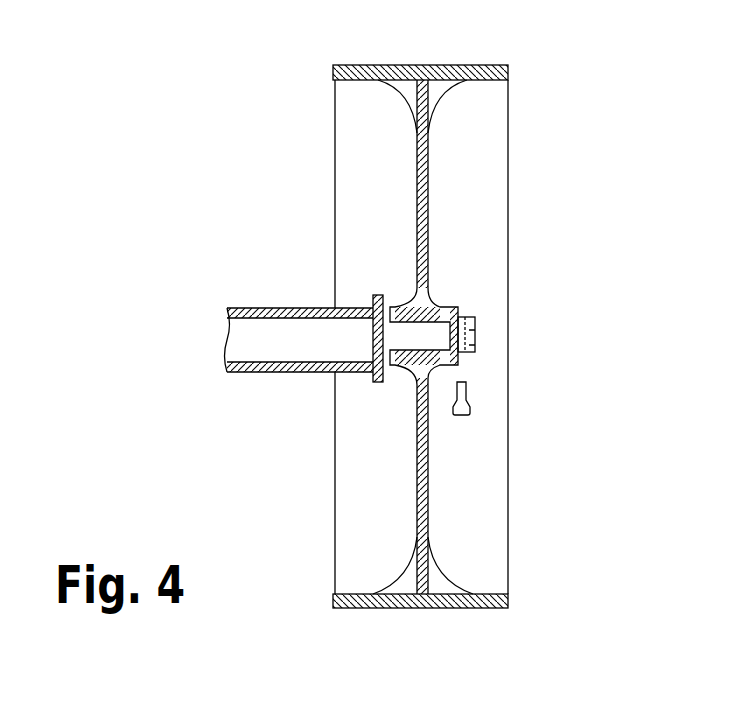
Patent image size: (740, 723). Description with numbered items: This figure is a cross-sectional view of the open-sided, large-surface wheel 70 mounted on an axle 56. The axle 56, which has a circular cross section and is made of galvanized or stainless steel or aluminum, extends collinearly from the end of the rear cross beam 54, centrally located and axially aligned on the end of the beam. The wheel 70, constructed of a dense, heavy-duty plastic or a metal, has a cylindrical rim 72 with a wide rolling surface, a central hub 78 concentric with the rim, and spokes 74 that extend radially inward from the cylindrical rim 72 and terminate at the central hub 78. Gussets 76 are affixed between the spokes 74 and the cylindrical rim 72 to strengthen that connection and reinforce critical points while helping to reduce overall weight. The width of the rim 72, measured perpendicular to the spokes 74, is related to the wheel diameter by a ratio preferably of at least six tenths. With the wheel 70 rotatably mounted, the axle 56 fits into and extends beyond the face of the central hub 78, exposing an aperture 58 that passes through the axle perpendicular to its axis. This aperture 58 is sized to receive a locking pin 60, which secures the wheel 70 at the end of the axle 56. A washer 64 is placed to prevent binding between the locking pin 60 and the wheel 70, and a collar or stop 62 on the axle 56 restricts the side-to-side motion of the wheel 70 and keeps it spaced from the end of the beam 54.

The rear cross beam 54 is at (303, 305).
The axle 56 is at (462, 315).
The aperture 58 is at (473, 338).
The locking pin 60 is at (470, 413).
The collar or stop 62 is at (375, 380).
The washer 64 is at (455, 307).
The wheel 70 is at (481, 304).
The cylindrical rim 72 is at (482, 64).
The spokes 74 is at (430, 250).
The gussets 76 is at (447, 103).
The central hub 78 is at (435, 367).